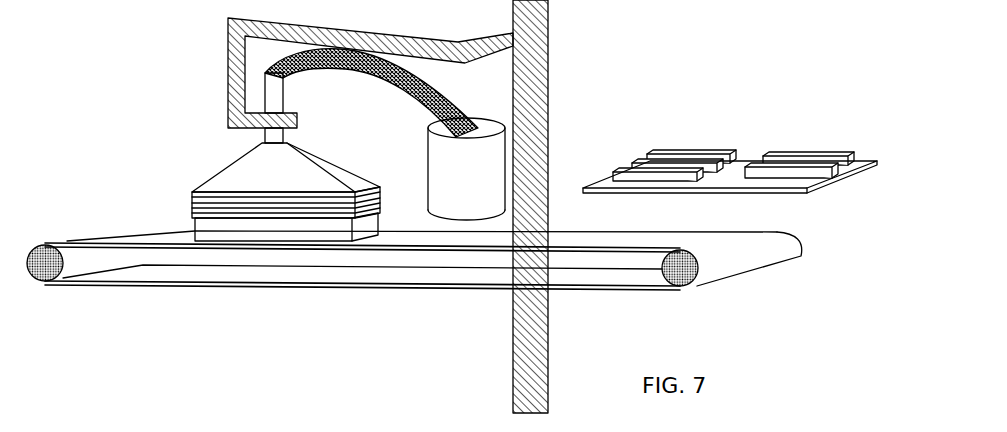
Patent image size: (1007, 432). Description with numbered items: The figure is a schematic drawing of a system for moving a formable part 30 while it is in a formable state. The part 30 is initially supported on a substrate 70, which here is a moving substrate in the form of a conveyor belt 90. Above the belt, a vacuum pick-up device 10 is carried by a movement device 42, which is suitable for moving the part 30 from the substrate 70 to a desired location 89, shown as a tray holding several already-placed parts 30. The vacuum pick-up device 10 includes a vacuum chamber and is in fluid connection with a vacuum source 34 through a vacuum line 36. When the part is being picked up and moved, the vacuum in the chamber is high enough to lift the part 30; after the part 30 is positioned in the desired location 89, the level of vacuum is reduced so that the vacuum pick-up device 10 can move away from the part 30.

The vacuum pick-up device 10 is at (250, 178).
The formable part 30 is at (207, 227).
The vacuum source 34 is at (453, 180).
The vacuum line 36 is at (393, 82).
The movement device 42 is at (227, 68).
The substrate 70 is at (140, 232).
The desired location 89 is at (737, 177).
The conveyor belt 90 is at (414, 278).